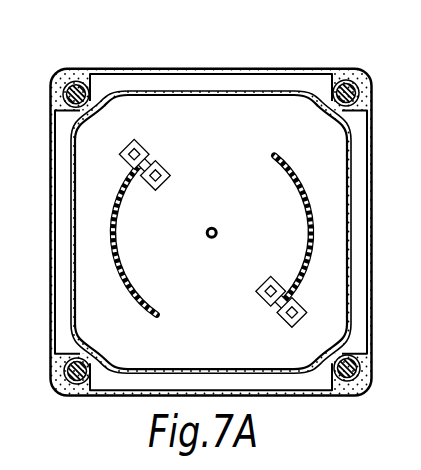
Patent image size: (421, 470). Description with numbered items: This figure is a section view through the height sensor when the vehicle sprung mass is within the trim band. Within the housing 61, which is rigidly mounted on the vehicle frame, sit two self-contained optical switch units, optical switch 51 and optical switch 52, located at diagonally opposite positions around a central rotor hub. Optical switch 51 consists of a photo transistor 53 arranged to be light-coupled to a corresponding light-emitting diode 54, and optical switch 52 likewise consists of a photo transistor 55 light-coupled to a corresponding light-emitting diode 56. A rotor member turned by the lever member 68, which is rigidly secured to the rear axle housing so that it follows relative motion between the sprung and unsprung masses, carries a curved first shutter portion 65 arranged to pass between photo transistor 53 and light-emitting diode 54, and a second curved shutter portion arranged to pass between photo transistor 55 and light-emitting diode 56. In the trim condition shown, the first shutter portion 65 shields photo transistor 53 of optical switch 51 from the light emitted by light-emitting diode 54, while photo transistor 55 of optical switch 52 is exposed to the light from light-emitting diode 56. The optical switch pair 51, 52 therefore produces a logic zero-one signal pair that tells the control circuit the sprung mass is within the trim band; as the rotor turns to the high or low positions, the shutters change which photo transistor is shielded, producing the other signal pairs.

The housing 61 is at (258, 68).
The optical switch 51 is at (164, 184).
The optical switch 52 is at (263, 284).
The photo transistor 53 is at (169, 172).
The light-emitting diode 54 is at (143, 147).
The photo transistor 55 is at (283, 320).
The light-emitting diode 56 is at (257, 294).
The first shutter portion 65 is at (121, 257).
The lever member 68 is at (296, 175).